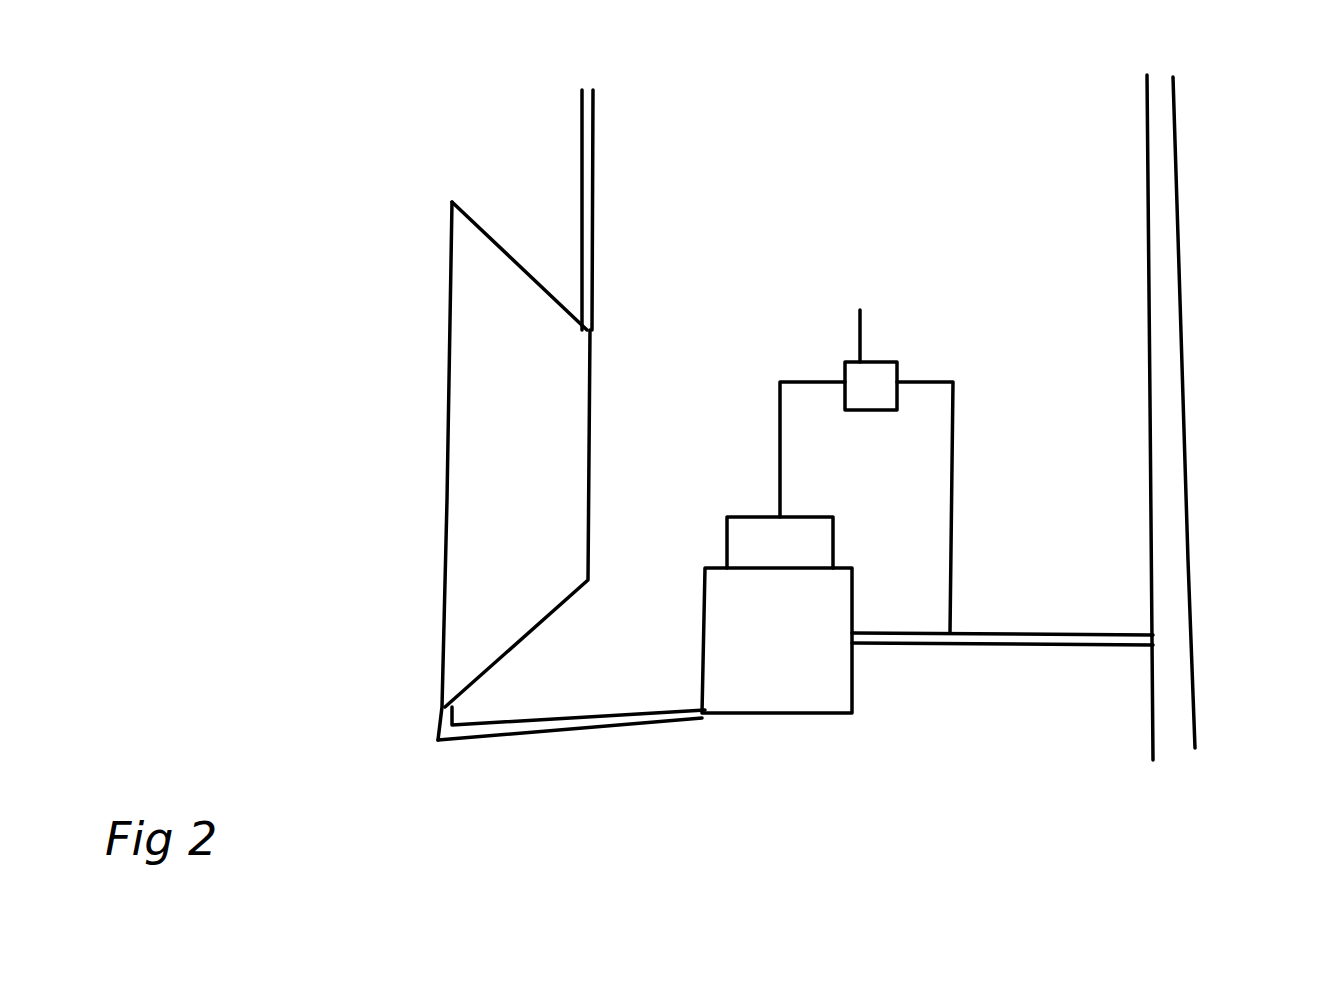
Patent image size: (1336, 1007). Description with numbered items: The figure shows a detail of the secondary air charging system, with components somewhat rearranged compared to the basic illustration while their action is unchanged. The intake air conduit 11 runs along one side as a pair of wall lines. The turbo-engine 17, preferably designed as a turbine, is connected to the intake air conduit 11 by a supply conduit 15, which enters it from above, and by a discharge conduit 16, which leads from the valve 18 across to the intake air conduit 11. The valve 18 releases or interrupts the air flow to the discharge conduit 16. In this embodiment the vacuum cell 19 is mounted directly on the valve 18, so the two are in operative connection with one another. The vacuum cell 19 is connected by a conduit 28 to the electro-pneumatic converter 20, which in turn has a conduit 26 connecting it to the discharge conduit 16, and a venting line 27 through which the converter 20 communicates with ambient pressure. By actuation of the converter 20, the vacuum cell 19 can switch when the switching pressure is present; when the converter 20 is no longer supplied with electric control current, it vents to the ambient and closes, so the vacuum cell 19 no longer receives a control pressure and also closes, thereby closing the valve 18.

The intake air conduit 11 is at (1167, 302).
The supply conduit 15 is at (597, 149).
The discharge conduit 16 is at (1065, 641).
The turbo-engine 17 is at (475, 360).
The valve 18 is at (797, 652).
The vacuum cell 19 is at (743, 537).
The electro-pneumatic converter 20 is at (877, 380).
The conduit 26 is at (952, 483).
The venting line 27 is at (857, 323).
The conduit 28 is at (782, 412).